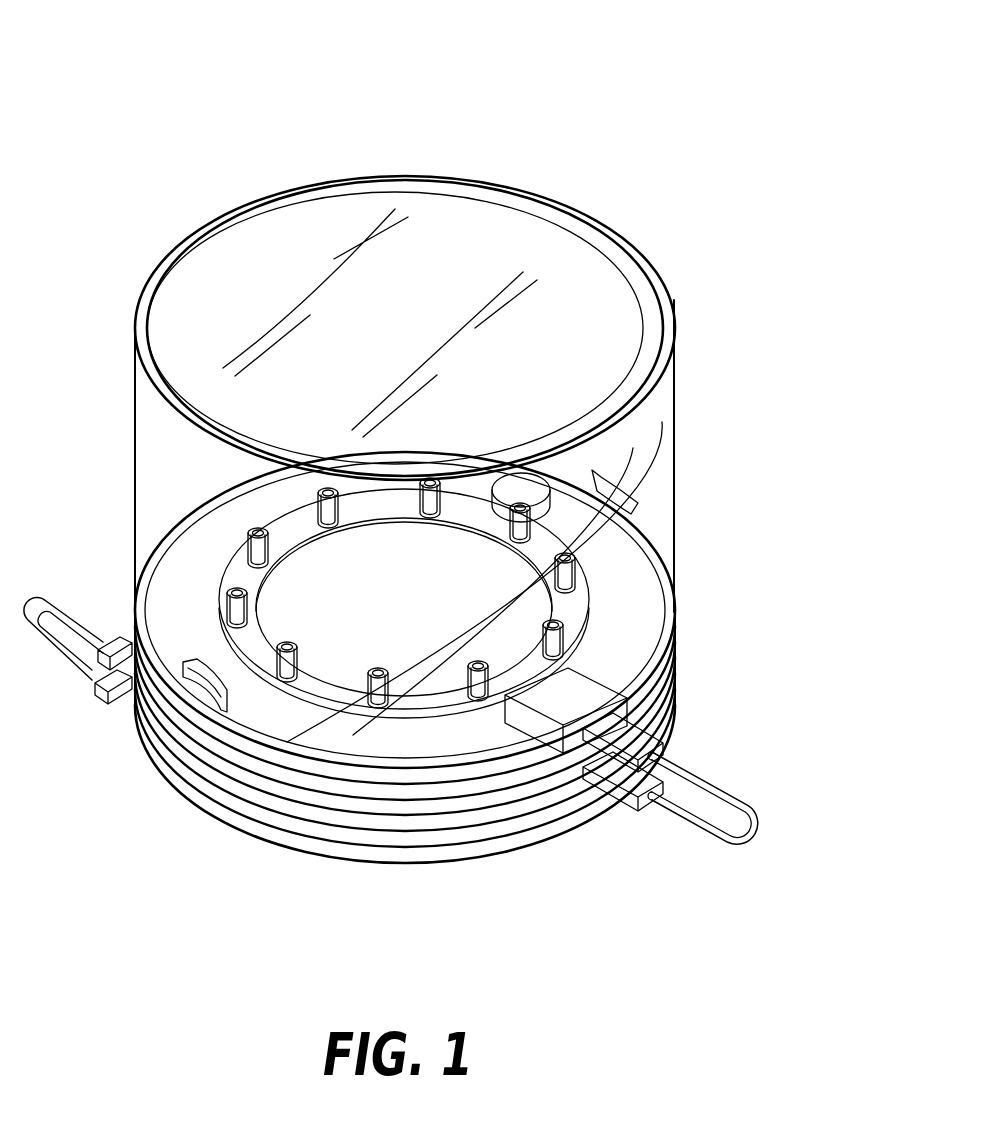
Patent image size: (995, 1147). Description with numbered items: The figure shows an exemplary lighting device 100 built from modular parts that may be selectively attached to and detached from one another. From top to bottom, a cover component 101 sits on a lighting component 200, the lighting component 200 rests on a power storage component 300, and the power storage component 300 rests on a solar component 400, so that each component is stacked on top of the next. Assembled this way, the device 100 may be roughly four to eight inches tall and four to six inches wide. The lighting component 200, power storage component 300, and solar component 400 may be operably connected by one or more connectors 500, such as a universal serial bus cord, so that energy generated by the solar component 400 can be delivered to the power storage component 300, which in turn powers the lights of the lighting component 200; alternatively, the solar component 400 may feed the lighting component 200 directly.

The lighting device 100 is at (438, 487).
The cover component 101 is at (675, 465).
The lighting component 200 is at (272, 757).
The power storage component 300 is at (360, 807).
The solar component 400 is at (453, 855).
The connector 500 is at (762, 828).